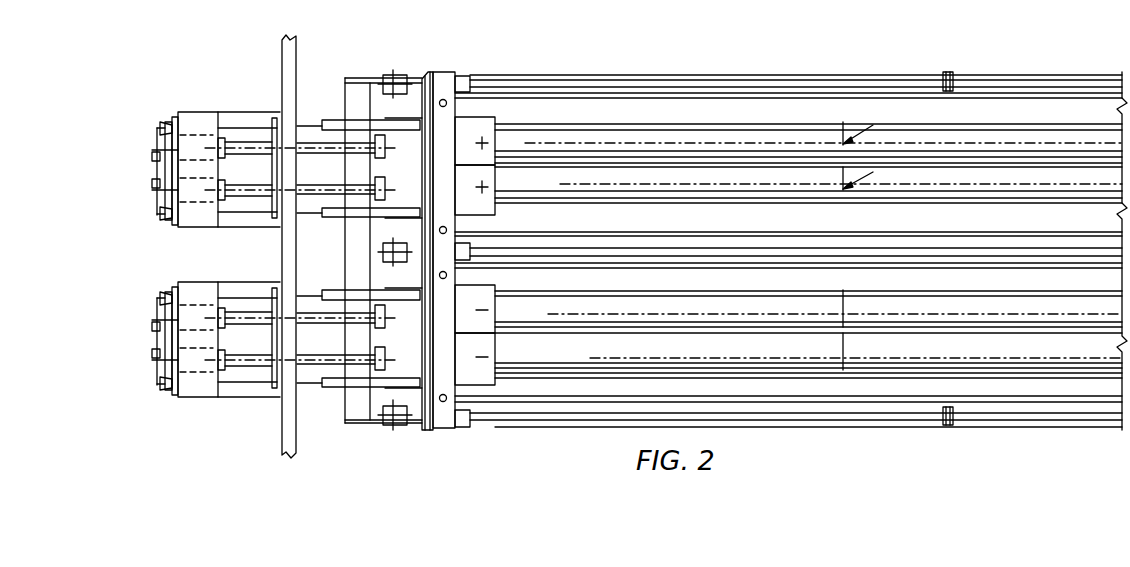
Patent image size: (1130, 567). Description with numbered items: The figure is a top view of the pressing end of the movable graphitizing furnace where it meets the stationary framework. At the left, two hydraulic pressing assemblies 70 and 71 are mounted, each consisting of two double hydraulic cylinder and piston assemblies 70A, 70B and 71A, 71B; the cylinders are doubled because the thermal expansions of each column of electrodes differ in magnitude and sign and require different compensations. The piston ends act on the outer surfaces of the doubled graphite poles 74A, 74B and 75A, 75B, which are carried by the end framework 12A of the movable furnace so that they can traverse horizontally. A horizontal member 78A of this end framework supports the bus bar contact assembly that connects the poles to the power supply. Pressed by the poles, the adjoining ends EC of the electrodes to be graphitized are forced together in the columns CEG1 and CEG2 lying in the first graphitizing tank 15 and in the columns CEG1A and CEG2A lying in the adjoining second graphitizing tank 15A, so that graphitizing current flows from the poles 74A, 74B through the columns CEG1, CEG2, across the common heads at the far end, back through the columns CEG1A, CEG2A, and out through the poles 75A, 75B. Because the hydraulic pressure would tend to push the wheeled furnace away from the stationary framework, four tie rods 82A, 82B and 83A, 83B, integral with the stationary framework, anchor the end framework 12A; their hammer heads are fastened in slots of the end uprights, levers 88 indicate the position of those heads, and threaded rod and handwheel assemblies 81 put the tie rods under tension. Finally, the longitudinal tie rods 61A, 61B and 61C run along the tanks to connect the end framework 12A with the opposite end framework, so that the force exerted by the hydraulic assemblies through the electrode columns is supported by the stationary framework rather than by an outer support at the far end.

The hydraulic pressing assembly 70 is at (220, 106).
The double hydraulic cylinder and piston assembly 70A is at (248, 148).
The double hydraulic cylinder and piston assembly 70B is at (247, 193).
The threaded rod and handwheel assembly 81 is at (165, 126).
The tie rod 82A is at (311, 125).
The tie rod 82B is at (312, 216).
The end framework 12A is at (367, 74).
The hydraulic pressing assembly 71 is at (214, 404).
The double hydraulic cylinder and piston assembly 71A is at (245, 315).
The double hydraulic cylinder and piston assembly 71B is at (245, 364).
The lever 88 is at (165, 300).
The tie rod 83A is at (312, 295).
The tie rod 83B is at (309, 386).
The horizontal member 78A is at (398, 428).
The graphite pole 74A is at (475, 127).
The graphite pole 74B is at (517, 126).
The graphite pole 75A is at (474, 370).
The graphite pole 75B is at (525, 377).
The tie rod 61C is at (985, 80).
The first graphitizing tank 15 is at (1050, 104).
The column of electrodes to be graphitized CEG1 is at (668, 135).
The column of electrodes to be graphitized CEG2 is at (773, 180).
The adjoining ends of the electrodes to be graphitized EC is at (873, 173).
The tie rod 61B is at (893, 245).
The column of electrodes to be graphitized CEG1A is at (982, 302).
The column of electrodes to be graphitized CEG2A is at (1083, 350).
The tie rod 61A is at (830, 398).
The second graphitizing tank 15A is at (768, 386).